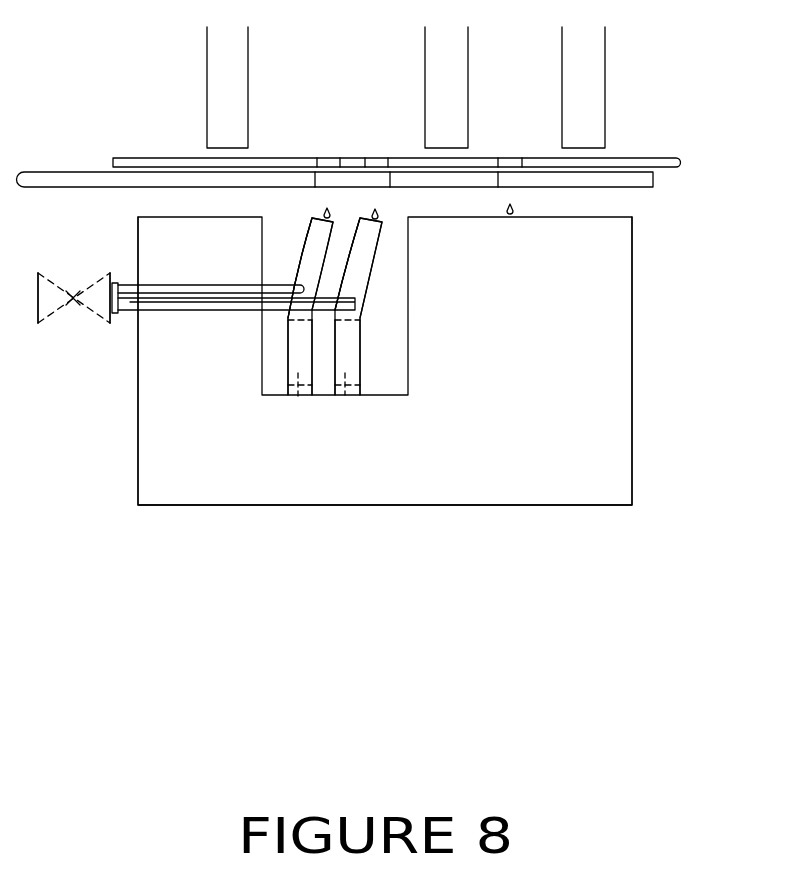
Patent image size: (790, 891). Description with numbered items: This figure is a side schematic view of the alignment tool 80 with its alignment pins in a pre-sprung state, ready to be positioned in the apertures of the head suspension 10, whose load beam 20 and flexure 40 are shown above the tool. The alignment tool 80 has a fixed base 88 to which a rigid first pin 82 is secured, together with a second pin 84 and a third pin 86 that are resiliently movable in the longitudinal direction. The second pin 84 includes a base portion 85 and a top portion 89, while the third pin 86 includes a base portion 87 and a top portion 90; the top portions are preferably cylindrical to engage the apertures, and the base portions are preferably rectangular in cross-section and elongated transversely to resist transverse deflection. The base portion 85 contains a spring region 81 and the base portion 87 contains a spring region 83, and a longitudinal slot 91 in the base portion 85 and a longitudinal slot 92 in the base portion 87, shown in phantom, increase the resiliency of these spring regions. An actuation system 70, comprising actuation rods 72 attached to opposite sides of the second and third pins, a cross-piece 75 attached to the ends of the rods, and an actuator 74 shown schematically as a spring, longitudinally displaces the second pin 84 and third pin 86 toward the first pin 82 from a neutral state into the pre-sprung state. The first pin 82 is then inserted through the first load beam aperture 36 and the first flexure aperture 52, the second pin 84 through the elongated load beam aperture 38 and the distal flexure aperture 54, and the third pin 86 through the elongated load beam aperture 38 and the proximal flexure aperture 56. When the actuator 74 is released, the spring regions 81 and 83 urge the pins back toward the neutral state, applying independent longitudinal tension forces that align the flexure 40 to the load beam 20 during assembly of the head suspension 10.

The head suspension 10 is at (626, 121).
The load beam 20 is at (648, 182).
The first load beam aperture 36 is at (513, 178).
The elongated load beam aperture 38 is at (320, 182).
The flexure 40 is at (660, 158).
The first flexure aperture 52 is at (513, 158).
The distal flexure aperture 54 is at (377, 158).
The proximal flexure aperture 56 is at (330, 158).
The actuation system 70 is at (95, 331).
The actuation rods 72 is at (130, 312).
The actuator 74 is at (48, 278).
The cross-piece 75 is at (117, 282).
The alignment tool 80 is at (115, 467).
The spring region 81 is at (367, 347).
The first pin 82 is at (511, 217).
The spring region 83 is at (287, 342).
The second pin 84 is at (365, 257).
The base portion 85 is at (357, 292).
The third pin 86 is at (318, 242).
The base portion 87 is at (305, 262).
The fixed base 88 is at (488, 434).
The top portion 89 is at (379, 211).
The top portion 90 is at (330, 209).
The longitudinal slot 91 is at (345, 395).
The longitudinal slot 92 is at (298, 397).